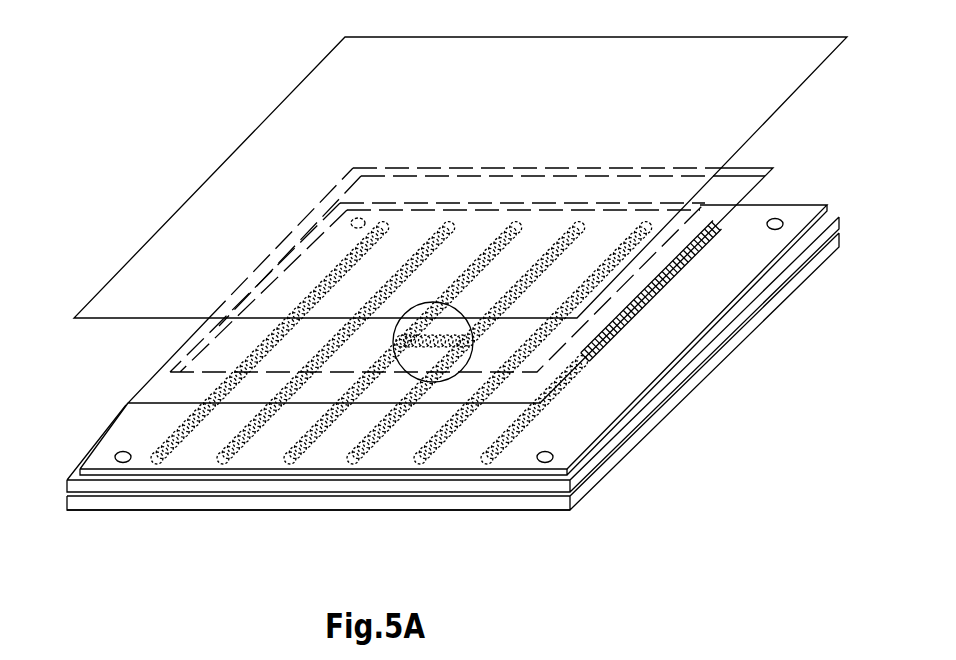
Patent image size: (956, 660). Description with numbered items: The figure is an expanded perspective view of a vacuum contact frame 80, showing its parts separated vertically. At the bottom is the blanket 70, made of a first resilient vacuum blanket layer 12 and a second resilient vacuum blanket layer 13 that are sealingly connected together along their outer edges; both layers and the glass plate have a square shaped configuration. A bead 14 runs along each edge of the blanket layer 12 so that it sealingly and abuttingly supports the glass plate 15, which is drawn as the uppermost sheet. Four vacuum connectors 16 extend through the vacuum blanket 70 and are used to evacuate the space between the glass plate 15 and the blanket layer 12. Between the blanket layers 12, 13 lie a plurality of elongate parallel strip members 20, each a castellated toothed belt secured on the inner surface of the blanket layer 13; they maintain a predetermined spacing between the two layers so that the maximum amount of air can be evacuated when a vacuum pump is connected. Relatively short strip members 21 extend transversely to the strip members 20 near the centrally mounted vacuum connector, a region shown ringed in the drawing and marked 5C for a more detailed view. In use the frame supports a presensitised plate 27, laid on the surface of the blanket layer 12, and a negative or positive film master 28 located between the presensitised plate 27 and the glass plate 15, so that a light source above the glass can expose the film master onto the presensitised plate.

The glass plate 15 is at (327, 82).
The vacuum connectors 16 is at (351, 219).
The presensitised plate 27 is at (431, 167).
The film master 28 is at (593, 177).
The short strip members 21 is at (420, 317).
The elongate parallel strip members 20 is at (160, 438).
The first resilient vacuum blanket layer 12 is at (650, 372).
The second resilient vacuum blanket layer 13 is at (380, 507).
The bead 14 is at (218, 470).
The vacuum contact frame 80 is at (327, 515).
The detail circle FIG. 5C is at (438, 382).
The blanket 70 is at (453, 387).